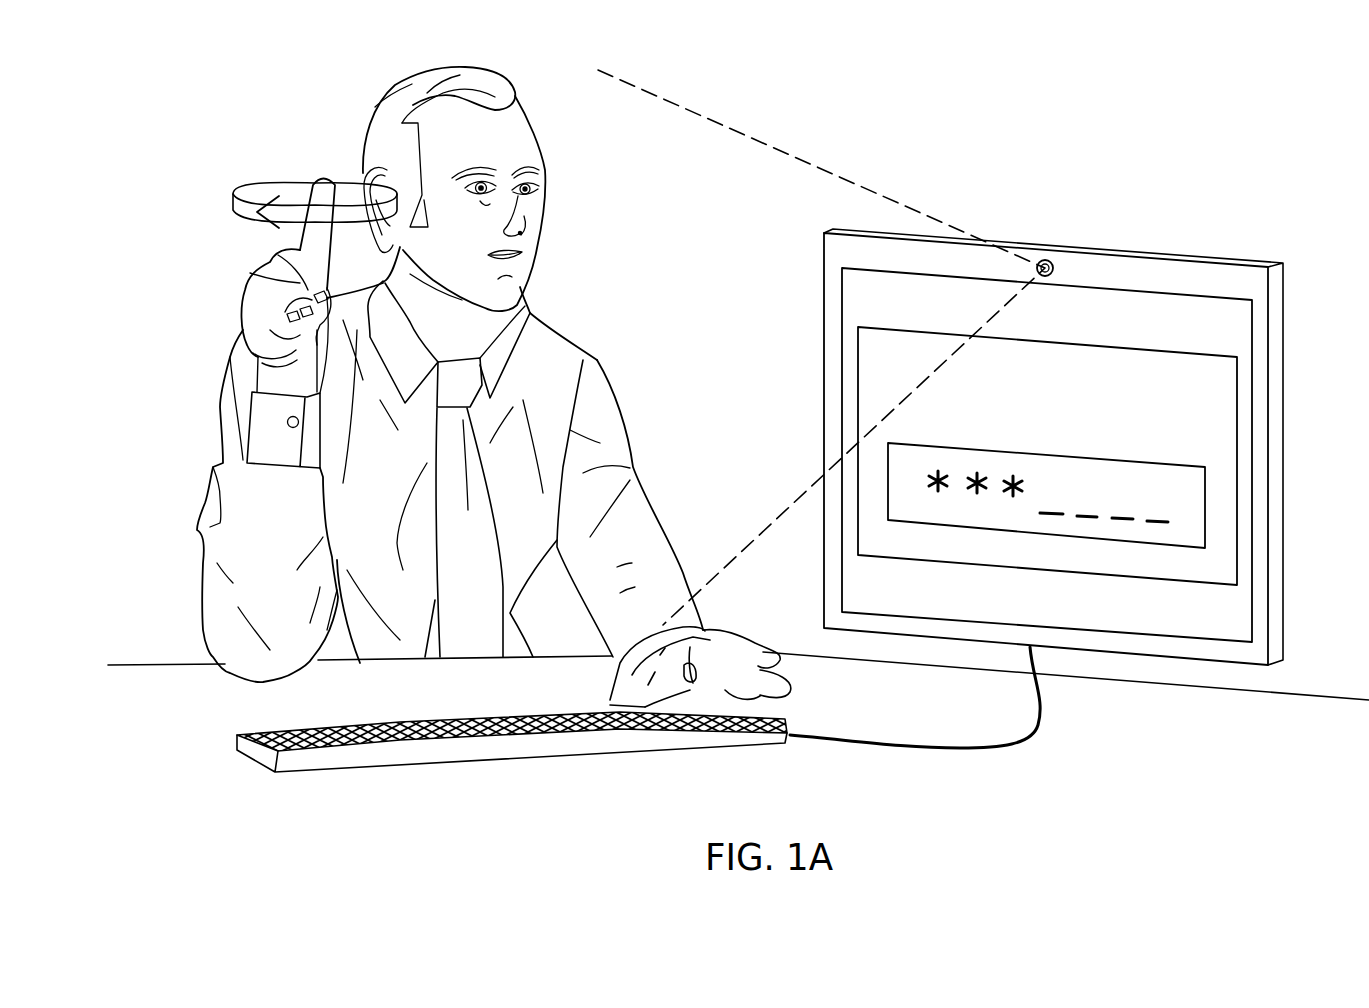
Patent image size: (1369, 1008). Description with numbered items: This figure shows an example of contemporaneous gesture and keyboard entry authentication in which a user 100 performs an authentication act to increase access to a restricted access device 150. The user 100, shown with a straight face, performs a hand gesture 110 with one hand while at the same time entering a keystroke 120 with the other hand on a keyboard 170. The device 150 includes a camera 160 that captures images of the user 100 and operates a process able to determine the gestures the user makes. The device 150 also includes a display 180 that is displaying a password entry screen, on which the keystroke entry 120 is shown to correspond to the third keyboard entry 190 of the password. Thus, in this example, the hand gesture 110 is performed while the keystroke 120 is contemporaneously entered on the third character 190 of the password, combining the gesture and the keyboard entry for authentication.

The user 100 is at (612, 380).
The gesture 110 is at (324, 180).
The keystroke 120 is at (693, 686).
The restricted access device 150 is at (1222, 258).
The camera 160 is at (1050, 259).
The keyboard 170 is at (473, 764).
The display 180 is at (1237, 395).
The third keyboard entry of the password 190 is at (1024, 485).